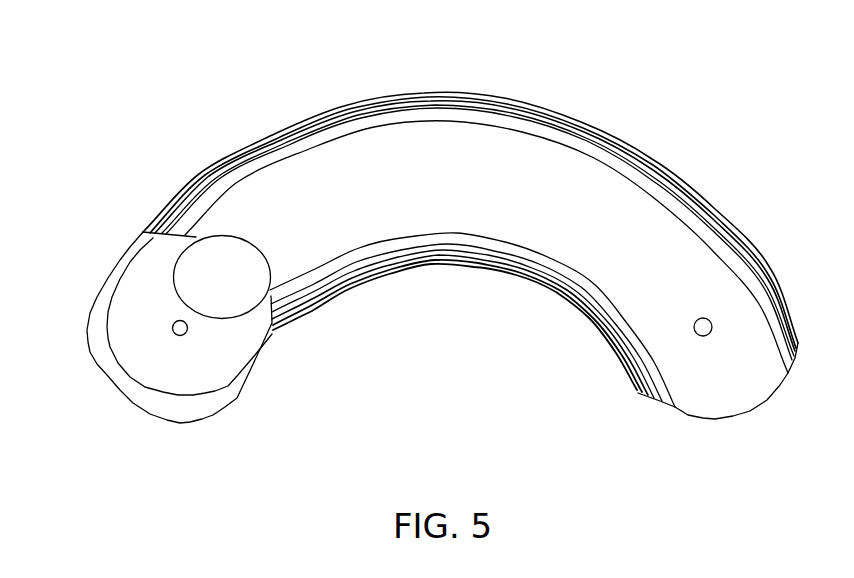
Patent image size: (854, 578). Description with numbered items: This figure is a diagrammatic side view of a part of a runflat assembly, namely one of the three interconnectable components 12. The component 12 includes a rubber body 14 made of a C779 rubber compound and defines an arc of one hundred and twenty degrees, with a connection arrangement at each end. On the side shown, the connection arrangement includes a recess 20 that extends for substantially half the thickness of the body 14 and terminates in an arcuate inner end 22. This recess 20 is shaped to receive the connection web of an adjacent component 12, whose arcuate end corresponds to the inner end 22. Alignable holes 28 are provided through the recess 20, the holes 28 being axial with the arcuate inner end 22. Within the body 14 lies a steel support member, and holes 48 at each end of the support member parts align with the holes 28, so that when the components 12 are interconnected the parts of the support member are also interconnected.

The component 12 is at (323, 92).
The rubber body 14 is at (520, 160).
The recess 20 is at (204, 408).
The arcuate inner end 22 is at (218, 238).
The holes 28 is at (180, 336).
The holes 48 is at (172, 328).